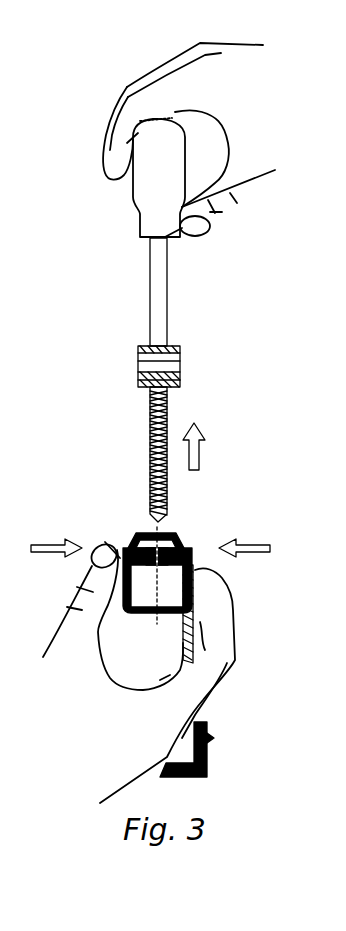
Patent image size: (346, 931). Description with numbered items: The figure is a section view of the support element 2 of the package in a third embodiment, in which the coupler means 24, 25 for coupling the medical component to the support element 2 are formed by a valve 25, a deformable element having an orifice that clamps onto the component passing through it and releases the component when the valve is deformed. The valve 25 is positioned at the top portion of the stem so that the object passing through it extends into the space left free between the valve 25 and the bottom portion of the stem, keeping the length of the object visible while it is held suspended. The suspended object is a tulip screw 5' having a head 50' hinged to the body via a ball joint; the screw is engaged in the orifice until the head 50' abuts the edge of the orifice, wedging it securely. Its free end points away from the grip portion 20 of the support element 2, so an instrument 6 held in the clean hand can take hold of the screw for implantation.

The instrument 6 is at (158, 307).
The head 50' is at (198, 362).
The tulip screw 5' is at (192, 454).
The valve 25 is at (182, 558).
The coupler means 24 is at (172, 627).
The support element 2 is at (212, 739).
The grip portion 20 is at (207, 760).